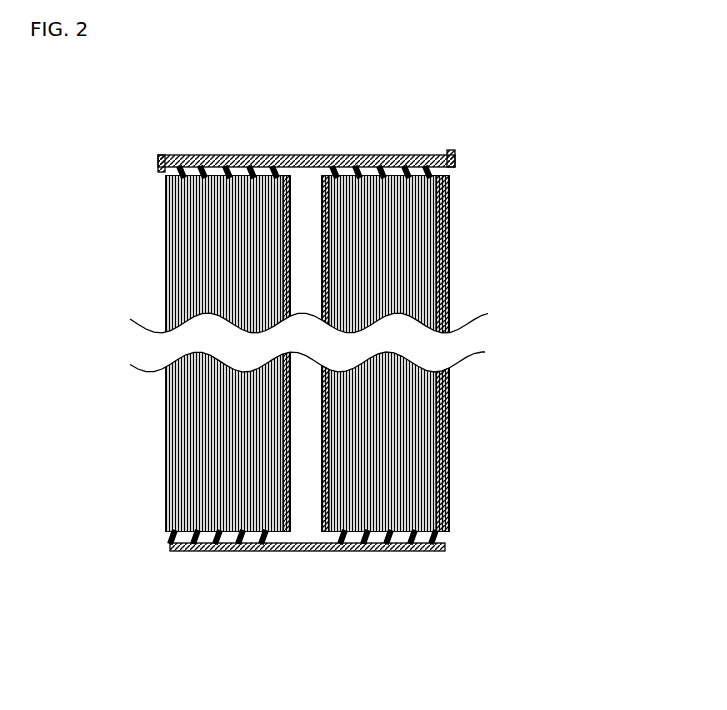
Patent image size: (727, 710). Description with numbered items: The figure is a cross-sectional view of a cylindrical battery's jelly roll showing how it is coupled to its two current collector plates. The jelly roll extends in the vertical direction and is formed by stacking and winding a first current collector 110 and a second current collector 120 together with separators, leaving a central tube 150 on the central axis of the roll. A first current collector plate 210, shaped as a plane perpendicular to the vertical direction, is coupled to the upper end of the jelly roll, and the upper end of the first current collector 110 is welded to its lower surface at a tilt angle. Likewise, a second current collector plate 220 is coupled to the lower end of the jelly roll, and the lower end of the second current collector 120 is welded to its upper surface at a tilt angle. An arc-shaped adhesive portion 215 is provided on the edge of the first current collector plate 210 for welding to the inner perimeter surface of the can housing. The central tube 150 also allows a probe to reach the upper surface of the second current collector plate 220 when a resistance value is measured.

The first current collector 110 is at (450, 170).
The second current collector 120 is at (445, 543).
The central tube 150 is at (300, 196).
The first current collector plate 210 is at (222, 157).
The adhesive portion 215 is at (160, 162).
The second current collector plate 220 is at (192, 552).